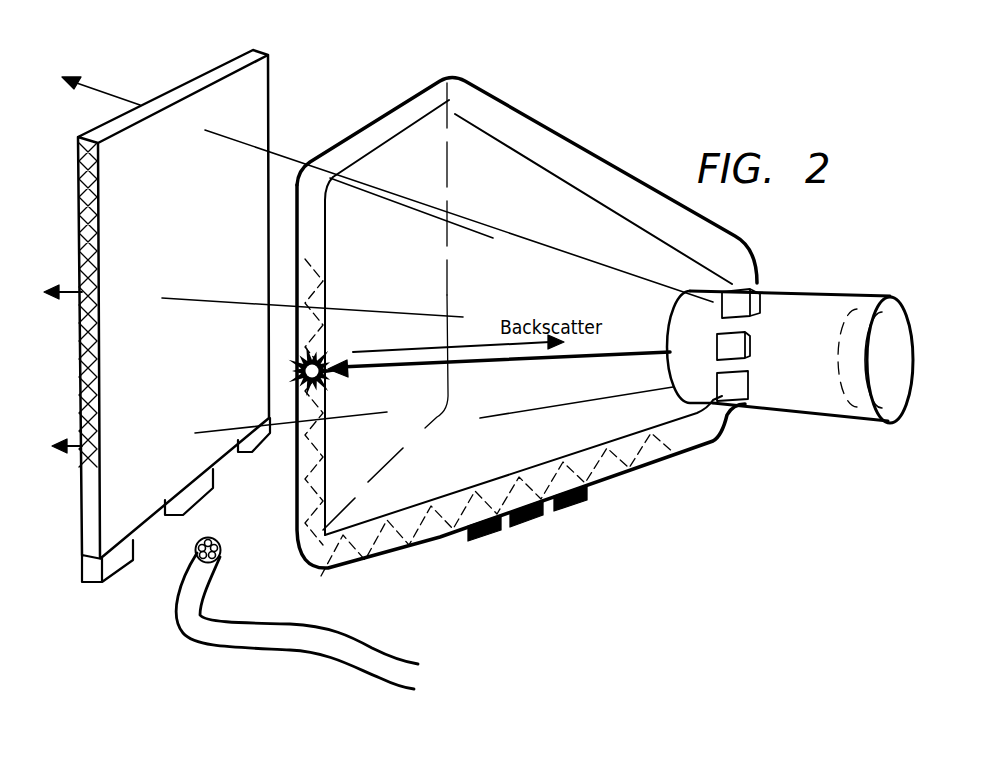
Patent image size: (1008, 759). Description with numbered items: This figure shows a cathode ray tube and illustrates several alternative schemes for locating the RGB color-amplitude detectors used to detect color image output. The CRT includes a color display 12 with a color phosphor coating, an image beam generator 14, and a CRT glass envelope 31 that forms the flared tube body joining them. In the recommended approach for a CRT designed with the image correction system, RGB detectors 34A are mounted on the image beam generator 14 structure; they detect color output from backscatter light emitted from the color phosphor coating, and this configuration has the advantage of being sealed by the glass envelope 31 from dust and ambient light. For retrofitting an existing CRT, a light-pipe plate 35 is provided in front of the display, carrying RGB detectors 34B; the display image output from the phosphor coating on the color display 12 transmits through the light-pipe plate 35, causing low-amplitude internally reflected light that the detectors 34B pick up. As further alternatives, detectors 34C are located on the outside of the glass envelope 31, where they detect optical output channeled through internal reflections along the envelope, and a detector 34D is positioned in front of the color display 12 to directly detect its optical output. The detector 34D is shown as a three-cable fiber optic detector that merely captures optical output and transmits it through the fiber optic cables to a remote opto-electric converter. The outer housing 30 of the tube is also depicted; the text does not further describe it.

The color display 12 is at (408, 122).
The housing 30 is at (490, 90).
The image beam generator 14 is at (840, 296).
The CRT glass envelope 31 is at (640, 453).
The RGB detectors 34A is at (757, 287).
The RGB detectors 34B is at (97, 586).
The RGB detectors 34C is at (537, 513).
The RGB detector 34D is at (222, 552).
The light-pipe plate 35 is at (88, 498).